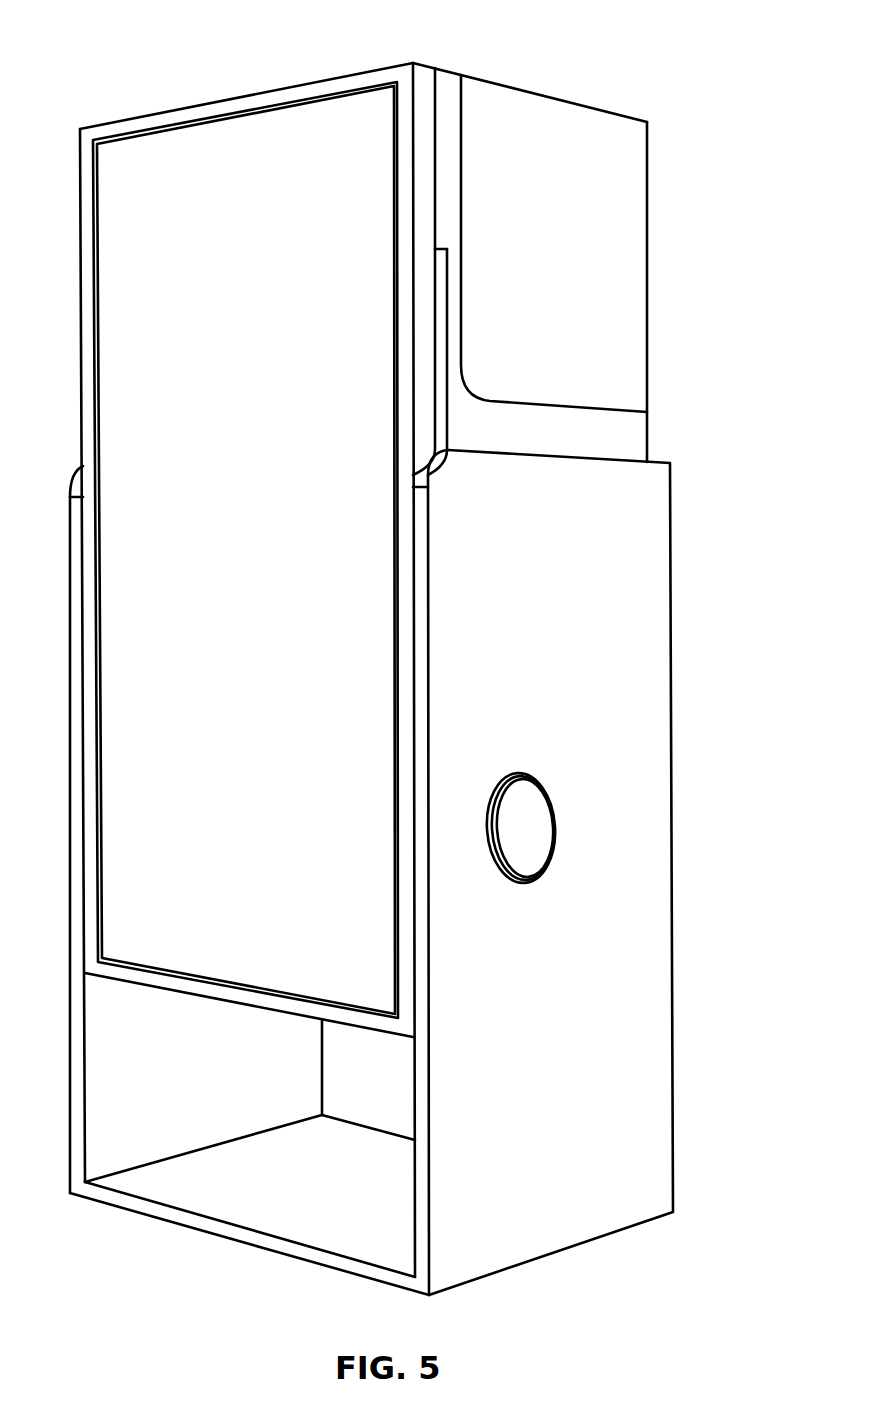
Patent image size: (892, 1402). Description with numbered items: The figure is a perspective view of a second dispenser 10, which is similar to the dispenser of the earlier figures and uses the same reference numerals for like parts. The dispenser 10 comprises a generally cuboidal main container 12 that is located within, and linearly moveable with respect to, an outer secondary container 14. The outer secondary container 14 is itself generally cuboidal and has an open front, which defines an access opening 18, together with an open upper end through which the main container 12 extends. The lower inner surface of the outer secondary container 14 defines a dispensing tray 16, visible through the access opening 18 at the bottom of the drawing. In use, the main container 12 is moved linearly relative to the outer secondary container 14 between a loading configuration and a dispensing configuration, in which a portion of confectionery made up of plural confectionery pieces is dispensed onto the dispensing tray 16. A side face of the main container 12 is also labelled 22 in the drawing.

The dispenser 10 is at (702, 46).
The main container 12 is at (620, 290).
The outer secondary container 14 is at (645, 943).
The dispensing tray 16 is at (305, 1228).
The access opening 18 is at (395, 1165).
The side face of upper housing 22 is at (630, 177).